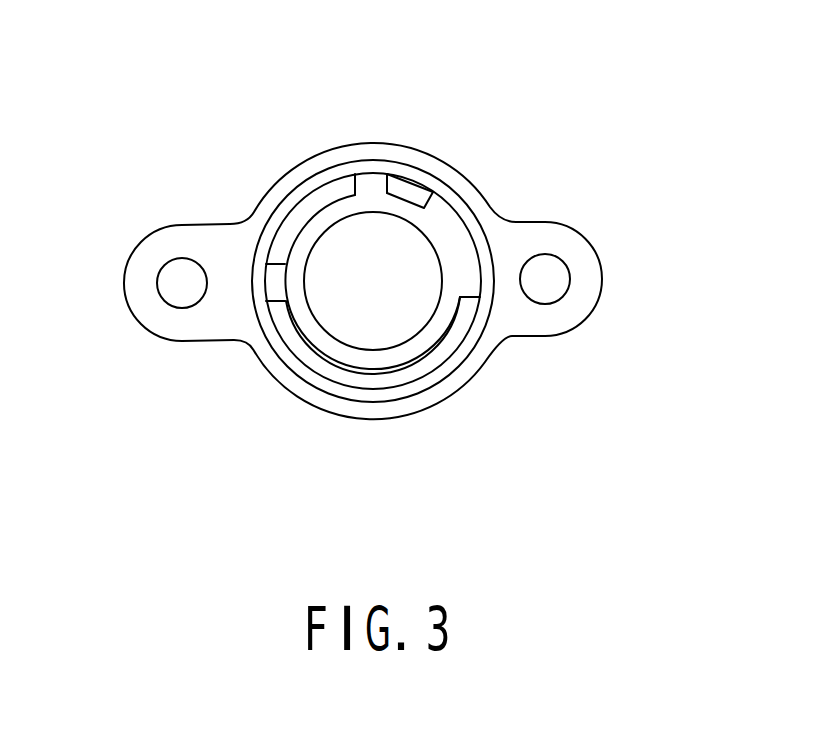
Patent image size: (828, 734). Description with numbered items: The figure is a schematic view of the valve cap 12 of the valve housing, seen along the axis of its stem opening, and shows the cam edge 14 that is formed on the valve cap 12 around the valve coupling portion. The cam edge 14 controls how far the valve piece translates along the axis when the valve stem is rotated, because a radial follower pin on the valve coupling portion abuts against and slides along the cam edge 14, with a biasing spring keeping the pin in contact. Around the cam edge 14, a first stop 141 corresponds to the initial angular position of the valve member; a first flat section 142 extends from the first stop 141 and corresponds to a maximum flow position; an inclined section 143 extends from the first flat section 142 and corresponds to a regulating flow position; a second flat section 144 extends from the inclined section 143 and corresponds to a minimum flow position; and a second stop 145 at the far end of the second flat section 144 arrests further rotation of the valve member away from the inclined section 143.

The valve cap 12 is at (482, 370).
The cam edge 14 is at (321, 376).
The first stop 141 is at (408, 187).
The first flat section 142 is at (446, 208).
The inclined section 143 is at (402, 377).
The second flat section 144 is at (272, 283).
The second stop 145 is at (272, 264).